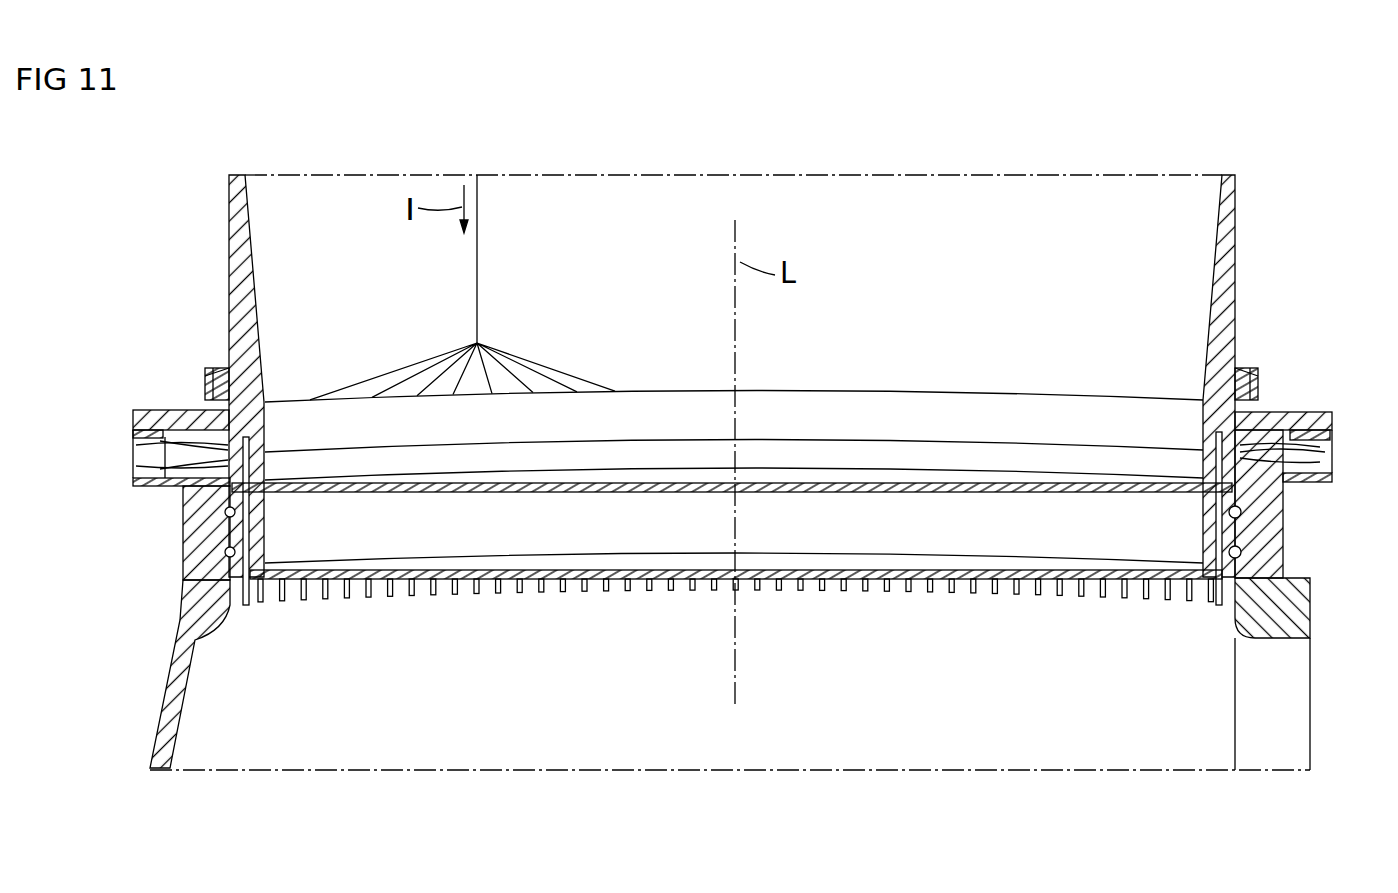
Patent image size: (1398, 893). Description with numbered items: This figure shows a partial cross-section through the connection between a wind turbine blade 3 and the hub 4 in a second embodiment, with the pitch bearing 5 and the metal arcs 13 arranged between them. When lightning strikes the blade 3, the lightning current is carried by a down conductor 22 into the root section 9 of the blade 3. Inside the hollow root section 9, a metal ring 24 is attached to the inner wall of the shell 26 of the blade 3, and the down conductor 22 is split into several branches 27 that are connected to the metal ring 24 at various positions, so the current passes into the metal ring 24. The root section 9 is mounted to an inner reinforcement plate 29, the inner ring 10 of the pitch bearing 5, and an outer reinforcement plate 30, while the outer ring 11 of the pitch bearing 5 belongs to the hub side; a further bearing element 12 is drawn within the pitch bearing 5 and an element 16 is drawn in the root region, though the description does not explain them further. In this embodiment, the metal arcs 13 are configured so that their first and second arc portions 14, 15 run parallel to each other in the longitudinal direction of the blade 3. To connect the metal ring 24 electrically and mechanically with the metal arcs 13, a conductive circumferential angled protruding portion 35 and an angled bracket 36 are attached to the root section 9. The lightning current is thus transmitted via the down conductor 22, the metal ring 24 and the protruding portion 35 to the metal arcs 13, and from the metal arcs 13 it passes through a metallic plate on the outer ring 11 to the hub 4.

The blade 3 is at (685, 338).
The hub 4 is at (172, 700).
The pitch bearing 5 is at (653, 544).
The root section 9 is at (685, 338).
The inner ring 10 is at (233, 562).
The outer ring 11 is at (190, 502).
The bearing 12 is at (227, 515).
The metal arcs 13 is at (706, 495).
The first arc portion 14 is at (180, 441).
The second arc portion 15 is at (180, 468).
The filter element 16 is at (248, 437).
The down conductor 22 is at (480, 209).
The metal ring 24 is at (665, 390).
The shell 26 is at (237, 178).
The branches 27 is at (357, 380).
The inner reinforcement plate 29 is at (990, 483).
The outer reinforcement plate 30 is at (990, 595).
The conductive circumferential angled protruding portion 35 is at (211, 380).
The angled bracket 36 is at (150, 410).